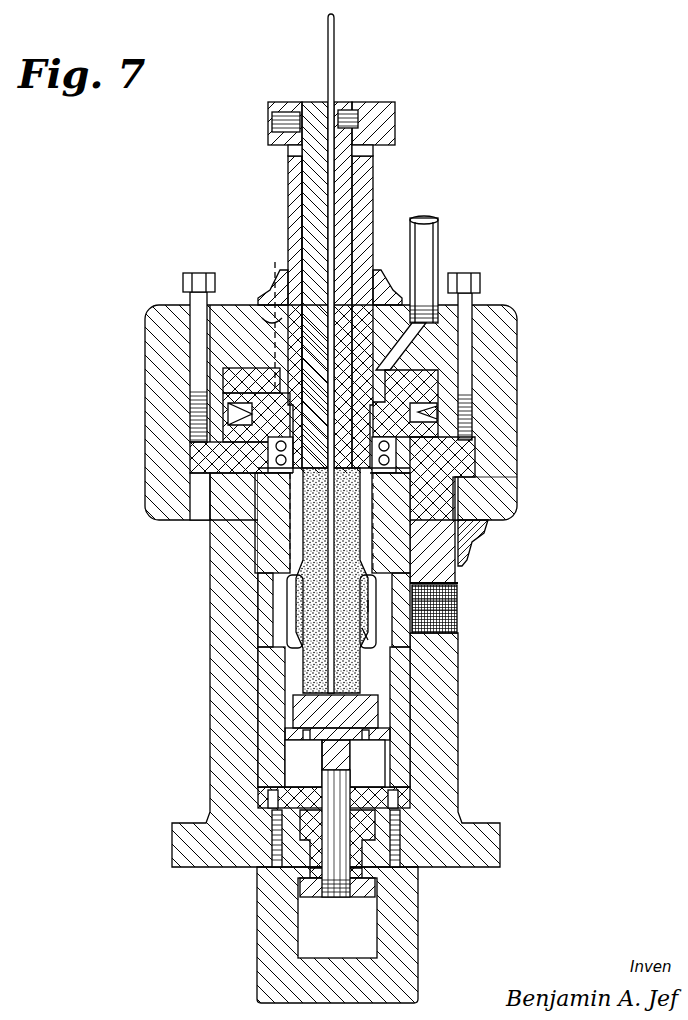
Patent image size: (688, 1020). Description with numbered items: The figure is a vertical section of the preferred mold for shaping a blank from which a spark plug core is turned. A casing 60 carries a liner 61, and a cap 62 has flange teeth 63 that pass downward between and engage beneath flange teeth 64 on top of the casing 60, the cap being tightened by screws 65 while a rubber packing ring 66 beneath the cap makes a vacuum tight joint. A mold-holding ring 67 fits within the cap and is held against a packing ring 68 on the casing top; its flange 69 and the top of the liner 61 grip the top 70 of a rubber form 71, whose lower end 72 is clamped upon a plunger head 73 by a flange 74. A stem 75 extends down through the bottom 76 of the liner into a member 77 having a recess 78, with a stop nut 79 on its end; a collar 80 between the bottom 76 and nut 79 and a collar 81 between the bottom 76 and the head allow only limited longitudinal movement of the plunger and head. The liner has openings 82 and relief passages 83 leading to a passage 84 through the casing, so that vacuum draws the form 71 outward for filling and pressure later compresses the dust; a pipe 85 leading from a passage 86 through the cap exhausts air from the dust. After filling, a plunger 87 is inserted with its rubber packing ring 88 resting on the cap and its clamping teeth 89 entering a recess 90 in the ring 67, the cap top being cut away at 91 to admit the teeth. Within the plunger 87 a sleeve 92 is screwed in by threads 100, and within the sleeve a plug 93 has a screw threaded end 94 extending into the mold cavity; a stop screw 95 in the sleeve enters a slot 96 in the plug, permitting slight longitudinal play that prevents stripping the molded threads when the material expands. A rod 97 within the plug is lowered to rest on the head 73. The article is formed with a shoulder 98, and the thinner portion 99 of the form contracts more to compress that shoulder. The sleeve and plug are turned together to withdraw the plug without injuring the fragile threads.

The casing 60 is at (443, 667).
The liner 61 is at (262, 666).
The cap 62 is at (508, 398).
The flange teeth 63 is at (465, 500).
The flange teeth 64 is at (432, 461).
The screws 65 is at (480, 280).
The rubber packing ring 66 is at (490, 530).
The mold-holding ring 67 is at (430, 380).
The packing ring 68 is at (436, 414).
The flange 69 is at (283, 442).
The top of rubber form 70 is at (395, 445).
The rubber form 71 is at (334, 609).
The lower end of form 72 is at (375, 722).
The plunger head 73 is at (322, 752).
The flange 74 is at (362, 742).
The stem 75 is at (333, 898).
The bottom of liner 76 is at (305, 835).
The member 77 is at (418, 918).
The recess 78 is at (305, 925).
The stop nut 79 is at (360, 900).
The collar 80 is at (310, 870).
The collar 81 is at (310, 770).
The openings 82 is at (265, 645).
The relief passages 83 is at (410, 573).
The passage 84 is at (445, 618).
The pipe 85 is at (436, 242).
The passage 86 is at (415, 340).
The plunger 87 is at (368, 197).
The rubber packing ring 88 is at (275, 290).
The clamping teeth 89 is at (288, 396).
The recess 90 is at (280, 381).
The cut-away portion of cap 91 is at (250, 300).
The sleeve 92 is at (372, 152).
The plug 93 is at (325, 178).
The screw threaded end 94 is at (325, 515).
The stop screw 95 is at (358, 128).
The slot 96 is at (338, 104).
The rod 97 is at (334, 48).
The shoulder 98 is at (364, 632).
The portion of form 99 is at (379, 606).
The threads 100 is at (305, 198).